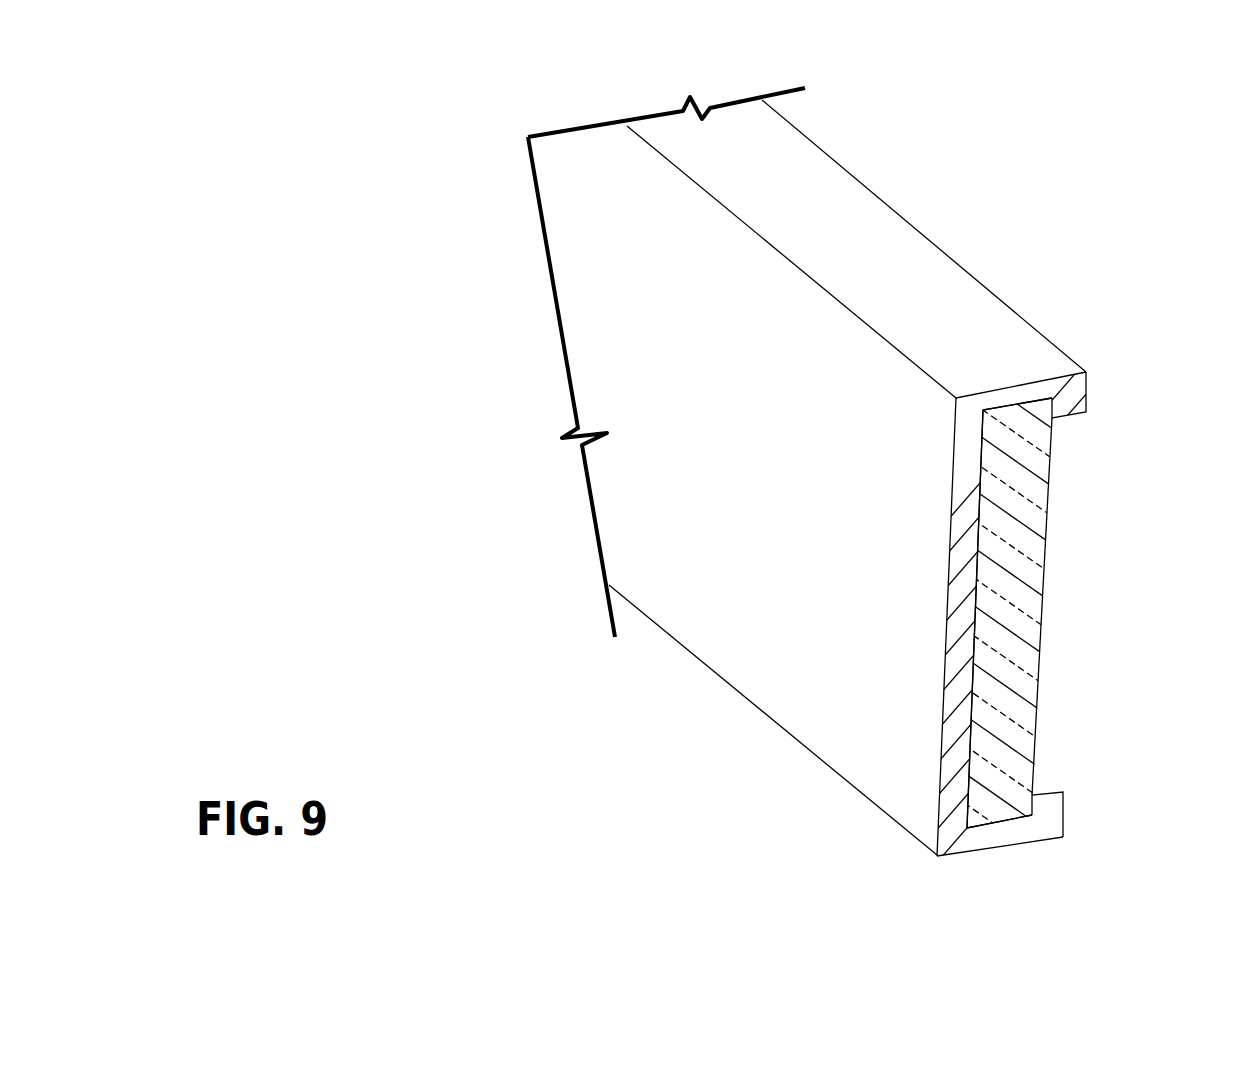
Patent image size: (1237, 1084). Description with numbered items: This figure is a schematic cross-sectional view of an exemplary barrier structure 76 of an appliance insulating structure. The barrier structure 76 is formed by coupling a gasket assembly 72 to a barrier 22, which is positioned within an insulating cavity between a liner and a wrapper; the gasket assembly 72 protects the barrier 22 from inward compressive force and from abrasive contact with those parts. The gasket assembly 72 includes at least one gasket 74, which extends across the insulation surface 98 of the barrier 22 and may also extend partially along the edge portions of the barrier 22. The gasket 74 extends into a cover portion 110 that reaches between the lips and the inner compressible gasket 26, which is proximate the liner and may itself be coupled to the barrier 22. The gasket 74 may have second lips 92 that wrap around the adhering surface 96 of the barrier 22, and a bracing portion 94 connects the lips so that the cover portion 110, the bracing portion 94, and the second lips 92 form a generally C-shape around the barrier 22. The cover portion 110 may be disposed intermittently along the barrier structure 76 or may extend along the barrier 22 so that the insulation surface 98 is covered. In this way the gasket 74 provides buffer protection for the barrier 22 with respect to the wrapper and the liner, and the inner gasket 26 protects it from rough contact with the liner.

The barrier structure 76 is at (945, 158).
The inner compressible gasket 26 is at (883, 270).
The gasket 74 is at (665, 363).
The gasket assembly 72 is at (708, 708).
The bracing portion 94 is at (1025, 393).
The second lip 92 is at (1066, 414).
The cover portion 110 is at (958, 598).
The barrier 22 is at (1027, 485).
The insulation surface 98 is at (968, 642).
The adhering surface 96 is at (1037, 720).